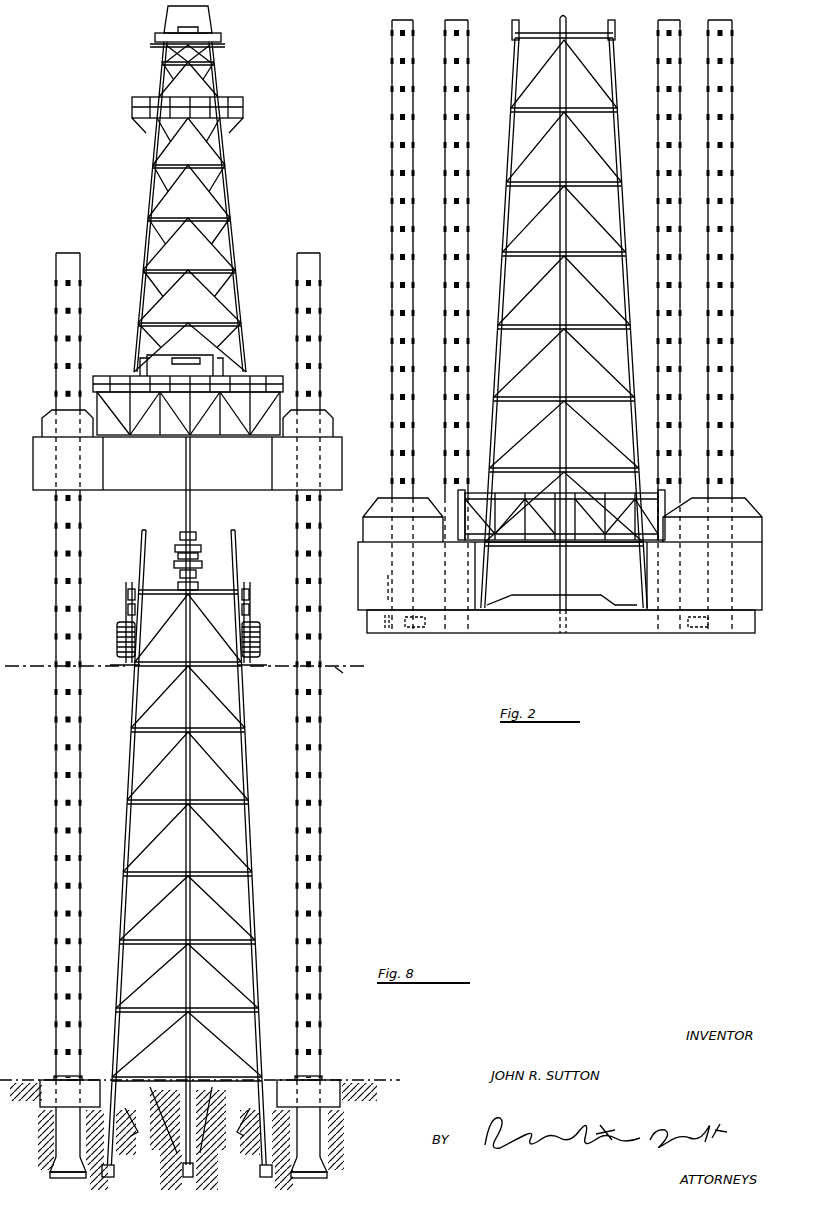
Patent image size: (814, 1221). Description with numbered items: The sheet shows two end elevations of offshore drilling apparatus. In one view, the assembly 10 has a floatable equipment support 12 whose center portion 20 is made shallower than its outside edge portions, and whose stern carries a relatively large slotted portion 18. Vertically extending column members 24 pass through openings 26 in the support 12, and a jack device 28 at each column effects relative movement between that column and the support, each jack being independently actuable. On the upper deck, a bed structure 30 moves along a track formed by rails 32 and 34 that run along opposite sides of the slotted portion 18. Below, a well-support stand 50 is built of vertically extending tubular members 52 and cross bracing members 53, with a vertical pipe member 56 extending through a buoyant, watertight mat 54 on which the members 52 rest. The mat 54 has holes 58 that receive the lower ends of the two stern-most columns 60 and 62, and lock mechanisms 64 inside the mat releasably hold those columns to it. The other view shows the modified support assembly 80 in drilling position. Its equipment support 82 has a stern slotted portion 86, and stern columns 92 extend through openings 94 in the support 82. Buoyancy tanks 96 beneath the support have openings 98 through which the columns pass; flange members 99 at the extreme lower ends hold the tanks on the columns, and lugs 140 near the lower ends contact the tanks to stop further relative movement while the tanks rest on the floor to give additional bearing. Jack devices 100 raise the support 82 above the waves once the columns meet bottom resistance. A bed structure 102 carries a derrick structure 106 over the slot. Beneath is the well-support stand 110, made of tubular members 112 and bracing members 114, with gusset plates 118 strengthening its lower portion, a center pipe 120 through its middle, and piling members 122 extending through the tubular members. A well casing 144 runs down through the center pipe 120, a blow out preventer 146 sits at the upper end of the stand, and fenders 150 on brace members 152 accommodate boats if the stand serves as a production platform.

In FIG. 8, the support assembly 80 is at (72, 141).
In FIG. 8, the columns 92 is at (56, 605).
In FIG. 8, the derrick structure 106 is at (228, 208).
In FIG. 8, the bed structure 102 is at (250, 376).
In FIG. 8, the equipment support 82 is at (40, 452).
In FIG. 8, the slotted portion 86 is at (103, 483).
In FIG. 8, the openings 94 is at (85, 468).
In FIG. 8, the jack devices 100 is at (44, 412).
In FIG. 8, the well casing 144 is at (190, 530).
In FIG. 8, the blow out preventer 146 is at (180, 546).
In FIG. 8, the well-support stand 110 is at (266, 747).
In FIG. 8, the tubular members 112 is at (132, 706).
In FIG. 8, the bracing members 114 is at (160, 876).
In FIG. 8, the center pipe 120 is at (194, 859).
In FIG. 8, the piling members 122 is at (113, 1171).
In FIG. 8, the gusset plates 118 is at (133, 1118).
In FIG. 8, the brace members 152 is at (126, 590).
In FIG. 8, the fenders 150 is at (117, 628).
In FIG. 8, the buoyancy tanks 96 is at (45, 1107).
In FIG. 8, the openings 98 is at (85, 1083).
In FIG. 8, the lugs 140 is at (62, 1082).
In FIG. 8, the flange members 99 is at (60, 1175).
In FIG. 2, the assembly 10 is at (366, 108).
In FIG. 2, the column 62 is at (392, 228).
In FIG. 2, the column members 24 is at (445, 204).
In FIG. 2, the column 60 is at (732, 194).
In FIG. 2, the well-support stand 50 is at (505, 83).
In FIG. 2, the tubular members 52 is at (618, 115).
In FIG. 2, the cross bracing members 53 is at (533, 334).
In FIG. 2, the pipe member 56 is at (560, 575).
In FIG. 2, the bed structure 30 is at (650, 492).
In FIG. 2, the rail 34 is at (461, 541).
In FIG. 2, the rail 32 is at (662, 541).
In FIG. 2, the equipment support 12 is at (762, 546).
In FIG. 2, the slotted portion 18 is at (475, 568).
In FIG. 2, the center portion 20 is at (536, 596).
In FIG. 2, the openings 26 is at (388, 575).
In FIG. 2, the jack devices 28 is at (372, 492).
In FIG. 2, the mat 54 is at (490, 633).
In FIG. 2, the lock mechanisms 64 is at (420, 630).
In FIG. 2, the holes 58 is at (388, 630).